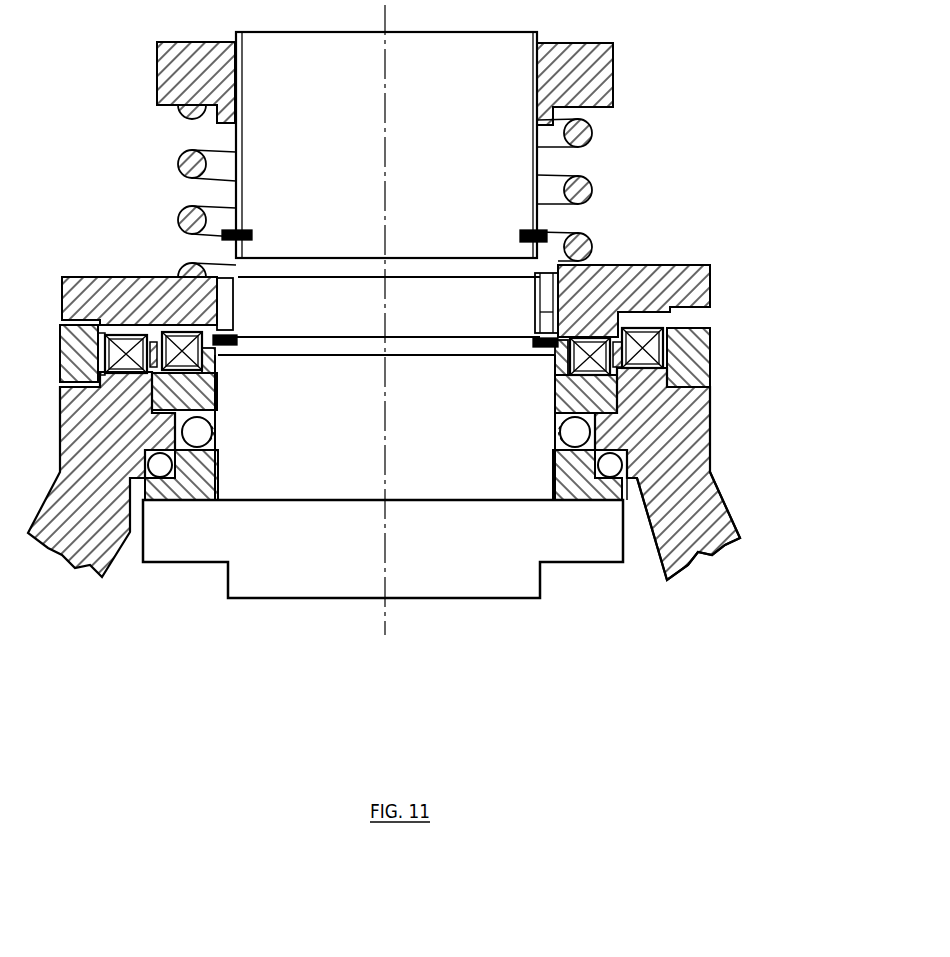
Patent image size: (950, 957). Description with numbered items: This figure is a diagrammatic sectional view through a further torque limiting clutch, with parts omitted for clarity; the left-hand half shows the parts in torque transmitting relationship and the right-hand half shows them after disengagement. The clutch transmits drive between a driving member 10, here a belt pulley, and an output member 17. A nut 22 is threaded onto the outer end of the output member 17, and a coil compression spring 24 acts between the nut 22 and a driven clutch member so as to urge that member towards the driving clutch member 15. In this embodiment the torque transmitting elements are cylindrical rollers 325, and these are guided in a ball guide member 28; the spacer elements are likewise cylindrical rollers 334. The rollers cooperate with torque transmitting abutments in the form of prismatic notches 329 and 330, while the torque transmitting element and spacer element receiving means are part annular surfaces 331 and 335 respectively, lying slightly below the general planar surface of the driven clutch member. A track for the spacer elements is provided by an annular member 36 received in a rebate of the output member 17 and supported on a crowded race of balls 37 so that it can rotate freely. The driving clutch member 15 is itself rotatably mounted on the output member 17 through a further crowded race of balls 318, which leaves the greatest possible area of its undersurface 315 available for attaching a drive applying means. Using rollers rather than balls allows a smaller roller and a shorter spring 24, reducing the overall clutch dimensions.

The driving member 10 is at (727, 532).
The driving clutch member 15 is at (687, 421).
The output member 17 is at (383, 315).
The nut 22 is at (601, 66).
The coil compression spring 24 is at (580, 187).
The ball guide member 28 is at (697, 371).
The annular member 36 is at (552, 412).
The crowded race 37 is at (553, 452).
The undersurface 315 is at (630, 483).
The crowded race of balls 318 is at (610, 466).
The cylindrical rollers 325 is at (127, 340).
The prismatic notch 329 is at (113, 386).
The prismatic notch 330 is at (103, 333).
The part annular surface 331 is at (662, 320).
The cylindrical rollers 334 is at (213, 356).
The part annular surface 335 is at (192, 330).